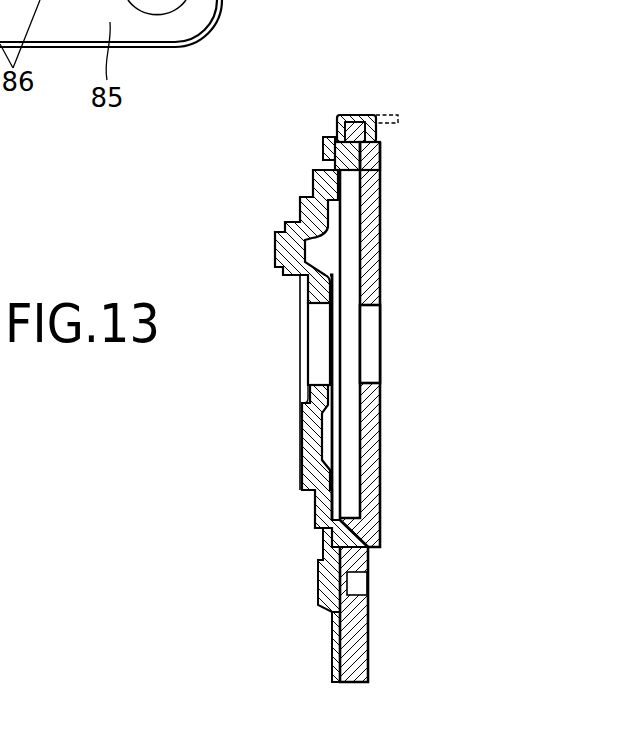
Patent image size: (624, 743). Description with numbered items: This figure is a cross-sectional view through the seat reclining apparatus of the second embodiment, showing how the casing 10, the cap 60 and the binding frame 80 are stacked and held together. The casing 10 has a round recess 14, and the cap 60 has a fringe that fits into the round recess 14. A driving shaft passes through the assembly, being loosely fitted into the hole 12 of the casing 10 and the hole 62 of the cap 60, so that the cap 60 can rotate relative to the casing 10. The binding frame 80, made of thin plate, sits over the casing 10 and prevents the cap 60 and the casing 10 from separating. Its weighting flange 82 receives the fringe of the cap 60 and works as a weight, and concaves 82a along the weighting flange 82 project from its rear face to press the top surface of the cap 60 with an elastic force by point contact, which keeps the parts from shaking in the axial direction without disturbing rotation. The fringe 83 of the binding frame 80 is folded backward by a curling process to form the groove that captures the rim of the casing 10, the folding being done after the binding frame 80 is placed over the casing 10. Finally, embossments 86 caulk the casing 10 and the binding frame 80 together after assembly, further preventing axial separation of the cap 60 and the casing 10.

The casing 10 is at (383, 244).
The hole 12 is at (383, 333).
The round recess 14 is at (379, 165).
The cap 60 is at (282, 277).
The hole 62 is at (317, 330).
The binding frame 80 is at (361, 114).
The weighting flange 82 is at (326, 138).
The concave 82a is at (322, 152).
The fringe 83 is at (377, 130).
The embossment 86 is at (318, 593).